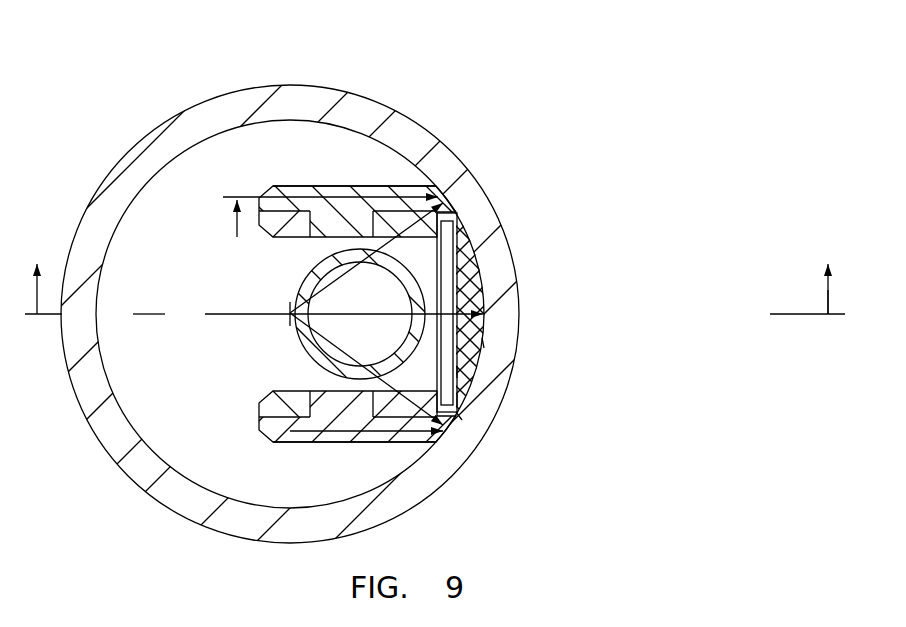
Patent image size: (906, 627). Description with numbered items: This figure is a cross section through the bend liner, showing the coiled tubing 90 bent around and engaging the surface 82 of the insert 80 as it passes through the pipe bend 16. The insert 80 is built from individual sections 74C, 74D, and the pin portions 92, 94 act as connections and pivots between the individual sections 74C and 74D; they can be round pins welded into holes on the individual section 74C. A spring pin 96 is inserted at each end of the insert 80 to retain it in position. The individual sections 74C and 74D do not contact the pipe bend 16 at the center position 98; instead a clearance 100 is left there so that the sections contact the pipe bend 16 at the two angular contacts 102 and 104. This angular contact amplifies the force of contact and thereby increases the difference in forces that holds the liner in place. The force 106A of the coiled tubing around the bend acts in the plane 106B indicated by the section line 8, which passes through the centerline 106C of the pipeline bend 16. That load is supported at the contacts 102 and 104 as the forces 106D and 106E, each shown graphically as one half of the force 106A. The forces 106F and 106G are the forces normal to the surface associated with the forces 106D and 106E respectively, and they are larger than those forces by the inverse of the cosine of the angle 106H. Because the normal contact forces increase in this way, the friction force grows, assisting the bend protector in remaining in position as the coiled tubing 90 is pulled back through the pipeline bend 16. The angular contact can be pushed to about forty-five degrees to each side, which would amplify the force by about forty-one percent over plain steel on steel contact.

The section line 8- 8 is at (435, 275).
The pipe bend 16 is at (407, 132).
The individual section 74C is at (440, 187).
The individual section 74D is at (463, 240).
The insert 80 is at (440, 337).
The surface 82 is at (458, 277).
The coiled tubing 90 is at (262, 382).
The pin portion 92 is at (340, 440).
The pin portion 94 is at (333, 218).
The spring pin 96 is at (460, 400).
The center position 98 is at (484, 346).
The clearance 100 is at (458, 373).
The contact 102 is at (440, 199).
The contact 104 is at (462, 420).
The force 106A is at (450, 312).
The plane 106B is at (826, 321).
The centerline 106C is at (290, 313).
The force 106D is at (443, 205).
The force 106E is at (443, 425).
The normal force 106F is at (323, 284).
The normal force 106G is at (327, 340).
The angle 106H is at (280, 316).